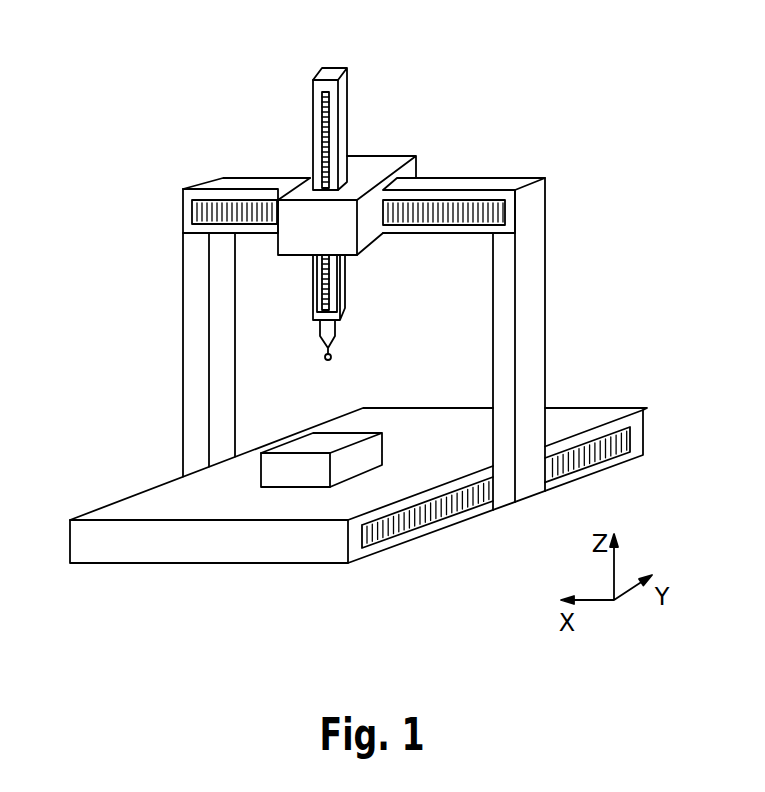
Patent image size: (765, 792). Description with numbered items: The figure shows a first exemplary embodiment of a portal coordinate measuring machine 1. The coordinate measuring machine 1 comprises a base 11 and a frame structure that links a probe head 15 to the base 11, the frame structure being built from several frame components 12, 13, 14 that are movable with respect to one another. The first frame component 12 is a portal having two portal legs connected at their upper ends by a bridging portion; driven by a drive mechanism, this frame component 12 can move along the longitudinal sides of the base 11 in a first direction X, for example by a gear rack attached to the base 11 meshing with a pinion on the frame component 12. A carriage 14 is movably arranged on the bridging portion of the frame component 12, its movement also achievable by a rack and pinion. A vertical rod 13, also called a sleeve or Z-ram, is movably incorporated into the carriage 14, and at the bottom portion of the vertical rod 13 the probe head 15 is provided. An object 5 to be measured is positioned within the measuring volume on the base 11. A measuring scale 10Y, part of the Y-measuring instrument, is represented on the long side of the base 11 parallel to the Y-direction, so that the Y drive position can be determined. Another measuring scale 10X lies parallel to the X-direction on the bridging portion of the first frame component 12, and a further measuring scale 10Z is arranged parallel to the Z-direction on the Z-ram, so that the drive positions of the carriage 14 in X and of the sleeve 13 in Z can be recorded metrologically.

The portal coordinate measuring machine 1 is at (568, 95).
The object 5 is at (318, 447).
The measuring scale 10X is at (200, 215).
The measuring scale 10Y is at (453, 503).
The measuring scale 10Z is at (327, 113).
The base 11 is at (133, 505).
The first frame component 12 is at (533, 268).
The vertical rod 13 is at (343, 293).
The carriage 14 is at (367, 170).
The probe head 15 is at (322, 345).